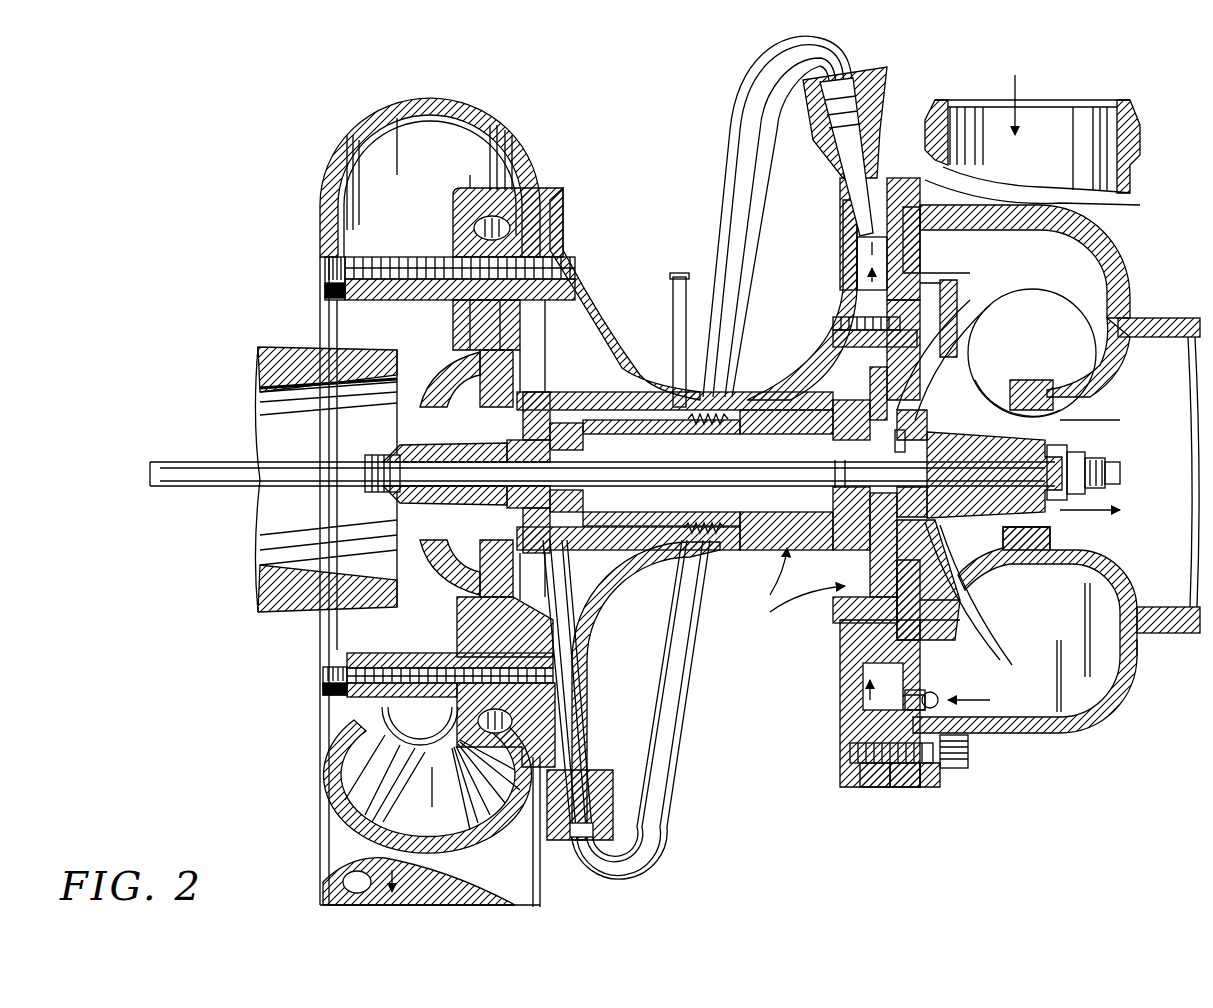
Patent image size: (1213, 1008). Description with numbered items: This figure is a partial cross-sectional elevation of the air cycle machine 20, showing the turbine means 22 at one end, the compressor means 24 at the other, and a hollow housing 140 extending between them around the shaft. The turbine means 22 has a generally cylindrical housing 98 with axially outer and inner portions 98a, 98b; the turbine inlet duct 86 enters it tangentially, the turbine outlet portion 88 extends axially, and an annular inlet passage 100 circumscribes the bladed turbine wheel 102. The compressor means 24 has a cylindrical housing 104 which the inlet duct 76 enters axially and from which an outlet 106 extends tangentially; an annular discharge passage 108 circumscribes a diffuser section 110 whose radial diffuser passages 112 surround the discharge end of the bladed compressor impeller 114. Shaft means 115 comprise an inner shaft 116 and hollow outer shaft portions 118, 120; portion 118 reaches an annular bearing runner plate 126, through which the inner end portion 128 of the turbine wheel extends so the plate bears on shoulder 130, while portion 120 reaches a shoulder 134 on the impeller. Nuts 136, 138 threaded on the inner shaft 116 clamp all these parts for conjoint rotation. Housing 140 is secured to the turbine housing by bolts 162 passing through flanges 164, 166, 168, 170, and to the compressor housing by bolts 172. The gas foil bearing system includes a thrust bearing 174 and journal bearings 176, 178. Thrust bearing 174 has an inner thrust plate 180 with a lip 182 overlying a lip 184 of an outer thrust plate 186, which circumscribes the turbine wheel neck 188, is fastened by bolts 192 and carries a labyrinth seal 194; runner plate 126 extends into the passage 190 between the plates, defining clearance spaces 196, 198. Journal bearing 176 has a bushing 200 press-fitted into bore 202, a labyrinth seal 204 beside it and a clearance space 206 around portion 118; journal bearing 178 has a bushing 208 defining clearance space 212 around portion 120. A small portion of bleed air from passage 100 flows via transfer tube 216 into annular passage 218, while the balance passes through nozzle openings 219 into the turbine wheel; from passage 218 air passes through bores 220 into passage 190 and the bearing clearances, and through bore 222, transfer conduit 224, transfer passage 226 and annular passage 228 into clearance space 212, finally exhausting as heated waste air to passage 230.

The air cycle machine 20 is at (1020, 838).
The turbine means 22 is at (1080, 735).
The compressor means 24 is at (312, 783).
The inlet duct 76 is at (272, 408).
The turbine inlet duct 86 is at (1140, 162).
The turbine outlet portion 88 is at (1166, 625).
The turbine housing 98 is at (1105, 713).
The axially outer portion of turbine housing 98a is at (1120, 672).
The axially inner portion of turbine housing 98b is at (977, 568).
The annular inlet passage 100 is at (1045, 694).
The bladed turbine wheel 102 is at (1000, 508).
The compressor housing 104 is at (333, 150).
The compressor outlet 106 is at (322, 860).
The annular discharge passage 108 is at (415, 130).
The annular diffuser section 110 is at (462, 622).
The diffuser passages 112 is at (458, 720).
The bladed compressor impeller 114 is at (445, 476).
The shaft means 115 is at (585, 428).
The inner shaft 116 is at (686, 480).
The first hollow outer shaft portion 118 is at (784, 428).
The second hollow outer shaft portion 120 is at (648, 428).
The annular bearing runner plate 126 is at (602, 472).
The axially inner end portion of turbine wheel 128 is at (858, 456).
The annular shoulder on turbine wheel 130 is at (862, 473).
The annular shoulder on compressor impeller 134 is at (574, 488).
The tightening nut 136 is at (1092, 456).
The tightening nut 138 is at (378, 455).
The hollow housing 140 is at (592, 312).
The bolts 162 is at (970, 755).
The annular flange 164 is at (928, 778).
The annular flange 166 is at (915, 788).
The annular flange on housing 140 168 is at (895, 788).
The annular flange on housing 140 170 is at (850, 788).
The bolts 172 is at (320, 277).
The gas foil thrust bearing 174 is at (772, 616).
The gas foil journal bearing 176 is at (754, 580).
The gas foil journal bearing 178 is at (640, 548).
The annular inner thrust plate 180 is at (833, 558).
The annular lip 182 is at (855, 690).
The annular lip 184 is at (845, 662).
The annular outer thrust plate 186 is at (954, 590).
The neck portion of turbine wheel 188 is at (920, 452).
The annular passage 190 is at (862, 347).
The bolts 192 is at (845, 636).
The knife-edged labyrinth seal 194 is at (917, 426).
The annular clearance space 196 is at (957, 374).
The annular clearance space 198 is at (960, 346).
The cylindrical bushing 200 is at (773, 370).
The circular bore 202 is at (777, 547).
The knife-edged labyrinth seal 204 is at (723, 509).
The annular clearance space 206 is at (812, 520).
The bushing 208 is at (690, 412).
The annular clearance space 212 is at (585, 660).
The transfer tube 216 is at (938, 694).
The annular passage 218 is at (842, 712).
The turbine nozzle openings 219 is at (958, 606).
The bores 220 is at (922, 628).
The bore 222 is at (858, 186).
The transfer conduit 224 is at (745, 250).
The transfer passage 226 is at (520, 519).
The annular passage 228 is at (507, 427).
The passage 230 is at (682, 277).